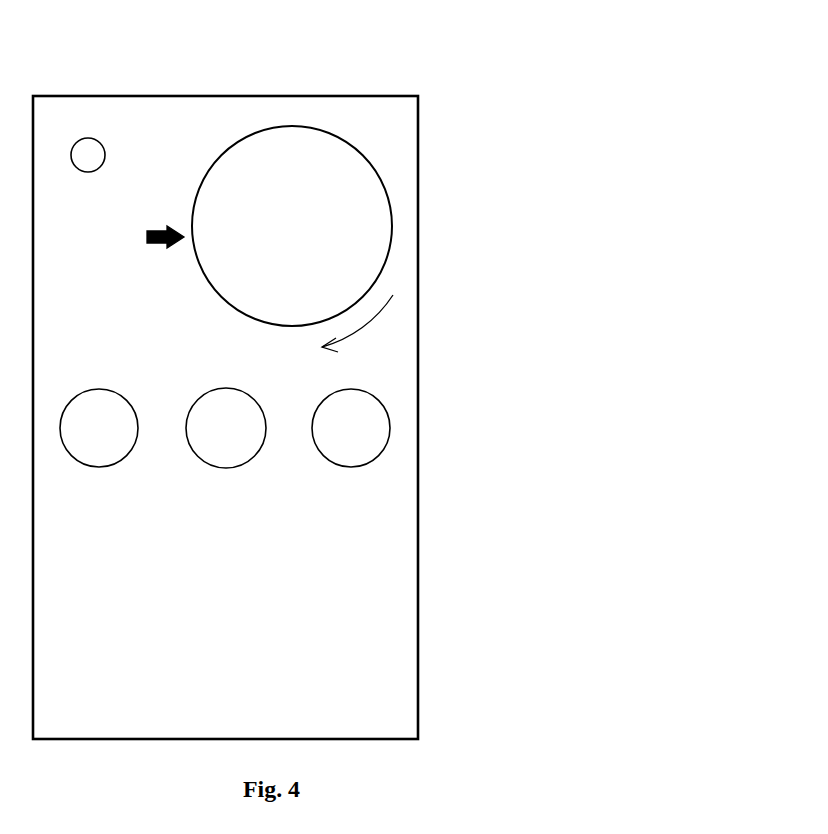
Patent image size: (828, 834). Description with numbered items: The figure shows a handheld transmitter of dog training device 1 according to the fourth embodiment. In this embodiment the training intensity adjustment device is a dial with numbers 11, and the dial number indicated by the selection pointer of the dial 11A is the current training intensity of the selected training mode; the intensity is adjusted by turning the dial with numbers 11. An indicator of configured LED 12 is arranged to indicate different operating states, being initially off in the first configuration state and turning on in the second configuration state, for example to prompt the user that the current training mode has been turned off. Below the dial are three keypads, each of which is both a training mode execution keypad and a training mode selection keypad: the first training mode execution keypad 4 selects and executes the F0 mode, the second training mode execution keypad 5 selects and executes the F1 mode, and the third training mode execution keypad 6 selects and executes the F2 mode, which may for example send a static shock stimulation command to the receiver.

The handheld transmitter of dog training device 1 is at (407, 87).
The dial with numbers 11 is at (402, 227).
The selection pointer of the dial 11A is at (153, 260).
The indicator of configured LED 12 is at (93, 192).
The training mode execution keypad 4 is at (355, 477).
The training mode execution keypad 5 is at (226, 475).
The training mode execution keypad 6 is at (105, 475).